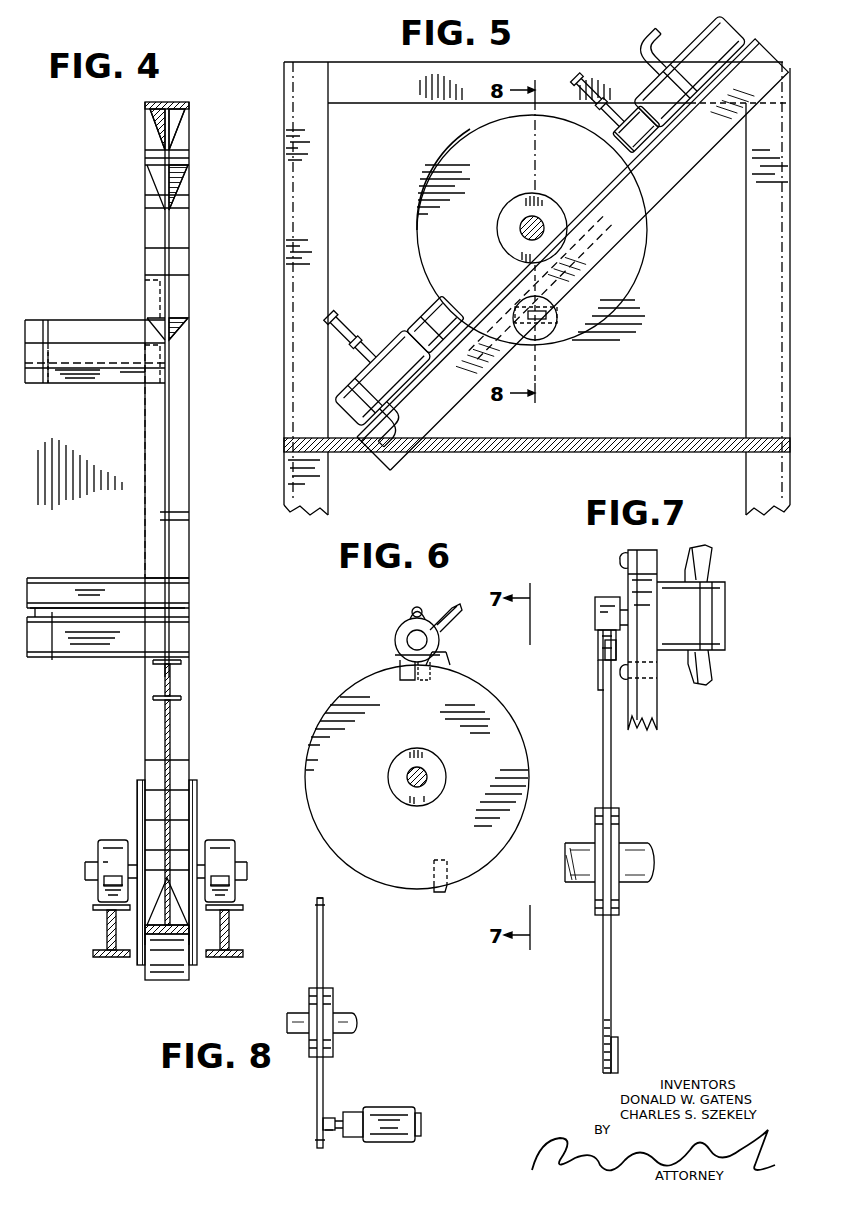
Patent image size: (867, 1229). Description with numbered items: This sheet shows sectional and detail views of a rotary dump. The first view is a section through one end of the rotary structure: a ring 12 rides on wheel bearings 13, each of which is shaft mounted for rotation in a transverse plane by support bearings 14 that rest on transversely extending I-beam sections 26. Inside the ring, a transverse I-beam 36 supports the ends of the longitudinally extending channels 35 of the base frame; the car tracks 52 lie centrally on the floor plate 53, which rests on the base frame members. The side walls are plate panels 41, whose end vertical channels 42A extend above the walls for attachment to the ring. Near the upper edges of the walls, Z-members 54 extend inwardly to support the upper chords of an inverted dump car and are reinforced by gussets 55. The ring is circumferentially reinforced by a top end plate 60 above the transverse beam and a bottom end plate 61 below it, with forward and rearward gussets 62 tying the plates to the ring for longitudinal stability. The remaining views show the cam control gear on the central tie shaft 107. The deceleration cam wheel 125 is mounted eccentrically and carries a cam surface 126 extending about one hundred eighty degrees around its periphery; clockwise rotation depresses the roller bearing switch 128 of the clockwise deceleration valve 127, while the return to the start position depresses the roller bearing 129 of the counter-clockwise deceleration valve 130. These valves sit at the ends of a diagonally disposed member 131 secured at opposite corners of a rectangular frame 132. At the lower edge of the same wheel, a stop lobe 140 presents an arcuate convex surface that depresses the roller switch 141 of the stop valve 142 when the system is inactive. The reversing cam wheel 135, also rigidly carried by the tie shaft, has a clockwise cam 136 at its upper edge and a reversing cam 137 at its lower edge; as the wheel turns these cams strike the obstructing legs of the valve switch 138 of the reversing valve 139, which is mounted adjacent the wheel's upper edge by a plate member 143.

In FIG. 4, the rings 12 is at (148, 205).
In FIG. 4, the wheel bearings 13 is at (182, 960).
In FIG. 4, the support bearings 14 is at (105, 842).
In FIG. 4, the I-beam sections 26 is at (108, 928).
In FIG. 4, the channels 35 is at (175, 637).
In FIG. 4, the I-beams 36 is at (160, 688).
In FIG. 4, the plate panels 41 is at (100, 441).
In FIG. 4, the end vertical channels 42A is at (152, 296).
In FIG. 4, the car tracks 52 is at (50, 590).
In FIG. 4, the floor plate 53 is at (52, 650).
In FIG. 4, the Z-members 54 is at (105, 380).
In FIG. 4, the gussets 55 is at (62, 298).
In FIG. 4, the top end plate 60 is at (170, 244).
In FIG. 4, the bottom end plate 61 is at (172, 735).
In FIG. 4, the gussets 62 is at (150, 118).
In FIG. 5, the central tie shaft 107 is at (520, 228).
In FIG. 6, the central tie shaft 107 is at (425, 771).
In FIG. 7, the central tie shaft 107 is at (620, 845).
In FIG. 8, the central tie shaft 107 is at (338, 1022).
In FIG. 5, the deceleration cam wheel 125 is at (501, 163).
In FIG. 8, the deceleration cam wheel 125 is at (322, 958).
In FIG. 5, the cam surface 126 is at (420, 263).
In FIG. 5, the clockwise deceleration valve 127 is at (735, 38).
In FIG. 5, the roller bearing switch 128 is at (622, 143).
In FIG. 5, the roller bearing 129 is at (425, 312).
In FIG. 5, the counter-clockwise deceleration valve 130 is at (360, 395).
In FIG. 5, the diagonally disposed member 131 is at (432, 410).
In FIG. 5, the rectangular frame 132 is at (315, 158).
In FIG. 6, the reversing cam wheel 135 is at (369, 822).
In FIG. 7, the reversing cam wheel 135 is at (612, 758).
In FIG. 6, the clockwise cam 136 is at (396, 632).
In FIG. 7, the clockwise cam 136 is at (598, 633).
In FIG. 6, the reversing cam 137 is at (440, 655).
In FIG. 7, the reversing cam 137 is at (605, 648).
In FIG. 6, the valve switch 138 is at (427, 638).
In FIG. 7, the valve switch 138 is at (608, 596).
In FIG. 6, the reversing valve 139 is at (412, 610).
In FIG. 7, the reversing valve 139 is at (722, 597).
In FIG. 5, the stop lobe 140 is at (557, 316).
In FIG. 8, the stop lobe 140 is at (328, 1116).
In FIG. 5, the roller switch 141 is at (535, 295).
In FIG. 8, the roller switch 141 is at (333, 1135).
In FIG. 5, the stop valve 142 is at (545, 335).
In FIG. 8, the stop valve 142 is at (383, 1106).
In FIG. 7, the plate member 143 is at (648, 708).